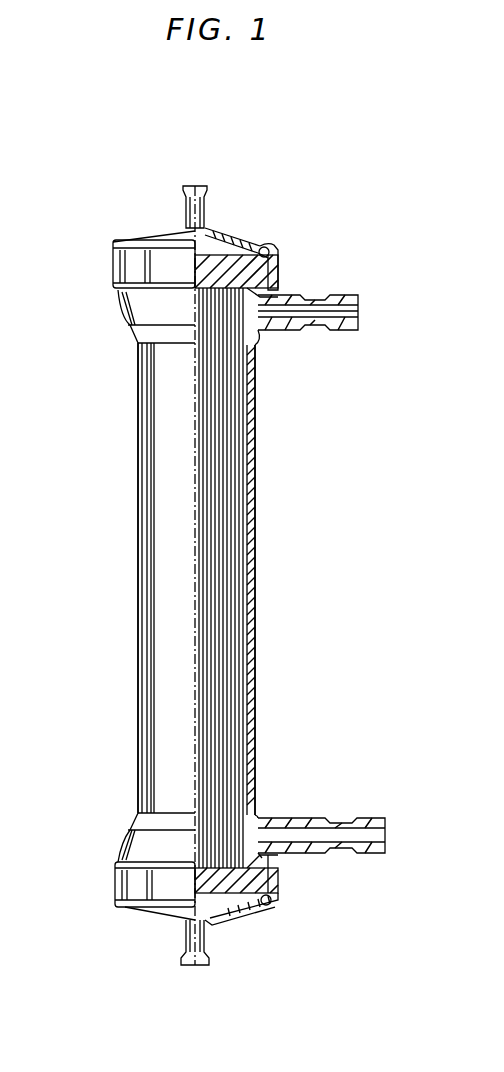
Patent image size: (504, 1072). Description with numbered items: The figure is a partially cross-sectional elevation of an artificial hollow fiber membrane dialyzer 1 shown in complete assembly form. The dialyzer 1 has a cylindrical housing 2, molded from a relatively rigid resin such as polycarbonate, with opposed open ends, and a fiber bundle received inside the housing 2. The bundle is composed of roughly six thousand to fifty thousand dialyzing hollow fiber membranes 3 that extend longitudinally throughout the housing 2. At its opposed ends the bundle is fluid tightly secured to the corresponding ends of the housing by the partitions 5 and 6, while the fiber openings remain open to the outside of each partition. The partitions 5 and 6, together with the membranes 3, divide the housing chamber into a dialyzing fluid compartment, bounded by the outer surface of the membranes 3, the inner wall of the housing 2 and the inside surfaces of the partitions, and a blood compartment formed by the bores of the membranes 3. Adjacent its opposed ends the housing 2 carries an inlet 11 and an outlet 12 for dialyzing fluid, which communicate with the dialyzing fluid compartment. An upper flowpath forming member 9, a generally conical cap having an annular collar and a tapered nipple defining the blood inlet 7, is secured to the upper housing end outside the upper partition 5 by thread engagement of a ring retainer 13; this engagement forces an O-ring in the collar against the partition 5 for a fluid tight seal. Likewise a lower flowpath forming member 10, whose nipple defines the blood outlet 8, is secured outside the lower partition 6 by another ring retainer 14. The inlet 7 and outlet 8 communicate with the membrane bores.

The artificial dialyzer 1 is at (133, 455).
The housing 2 is at (158, 400).
The hollow fiber membranes 3 is at (230, 500).
The partition 5 is at (272, 268).
The partition 6 is at (280, 880).
The inlet 7 is at (195, 183).
The outlet 8 is at (200, 964).
The upper flowpath forming member 9 is at (222, 236).
The lower flowpath forming member 10 is at (238, 910).
The inlet 11 is at (388, 832).
The outlet 12 is at (360, 313).
The ring retainer 13 is at (270, 249).
The ring retainer 14 is at (282, 903).